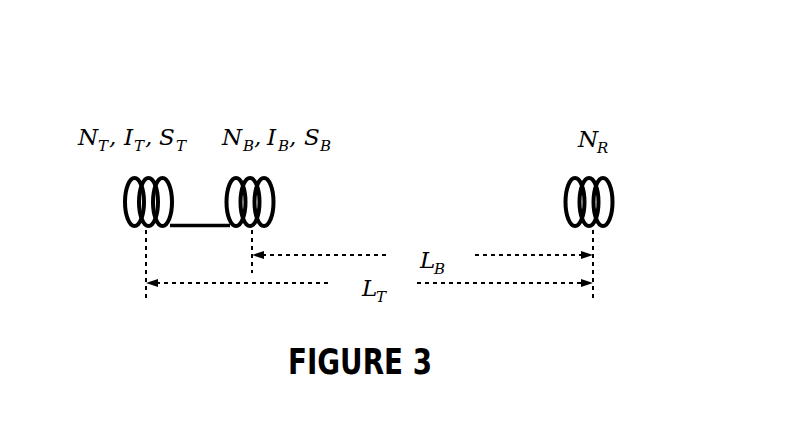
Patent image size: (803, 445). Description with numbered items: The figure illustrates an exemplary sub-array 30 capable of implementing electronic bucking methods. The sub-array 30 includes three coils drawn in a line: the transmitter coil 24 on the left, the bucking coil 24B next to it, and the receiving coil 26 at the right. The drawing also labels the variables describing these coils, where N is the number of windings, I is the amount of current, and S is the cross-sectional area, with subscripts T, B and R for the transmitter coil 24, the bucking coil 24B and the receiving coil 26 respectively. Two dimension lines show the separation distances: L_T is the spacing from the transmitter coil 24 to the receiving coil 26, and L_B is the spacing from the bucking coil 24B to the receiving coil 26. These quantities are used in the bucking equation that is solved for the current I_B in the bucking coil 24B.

The transmitter coil 24 is at (131, 228).
The bucking coil 24B is at (270, 194).
The receiving coil 26 is at (613, 197).
The sub-array 30 is at (458, 132).